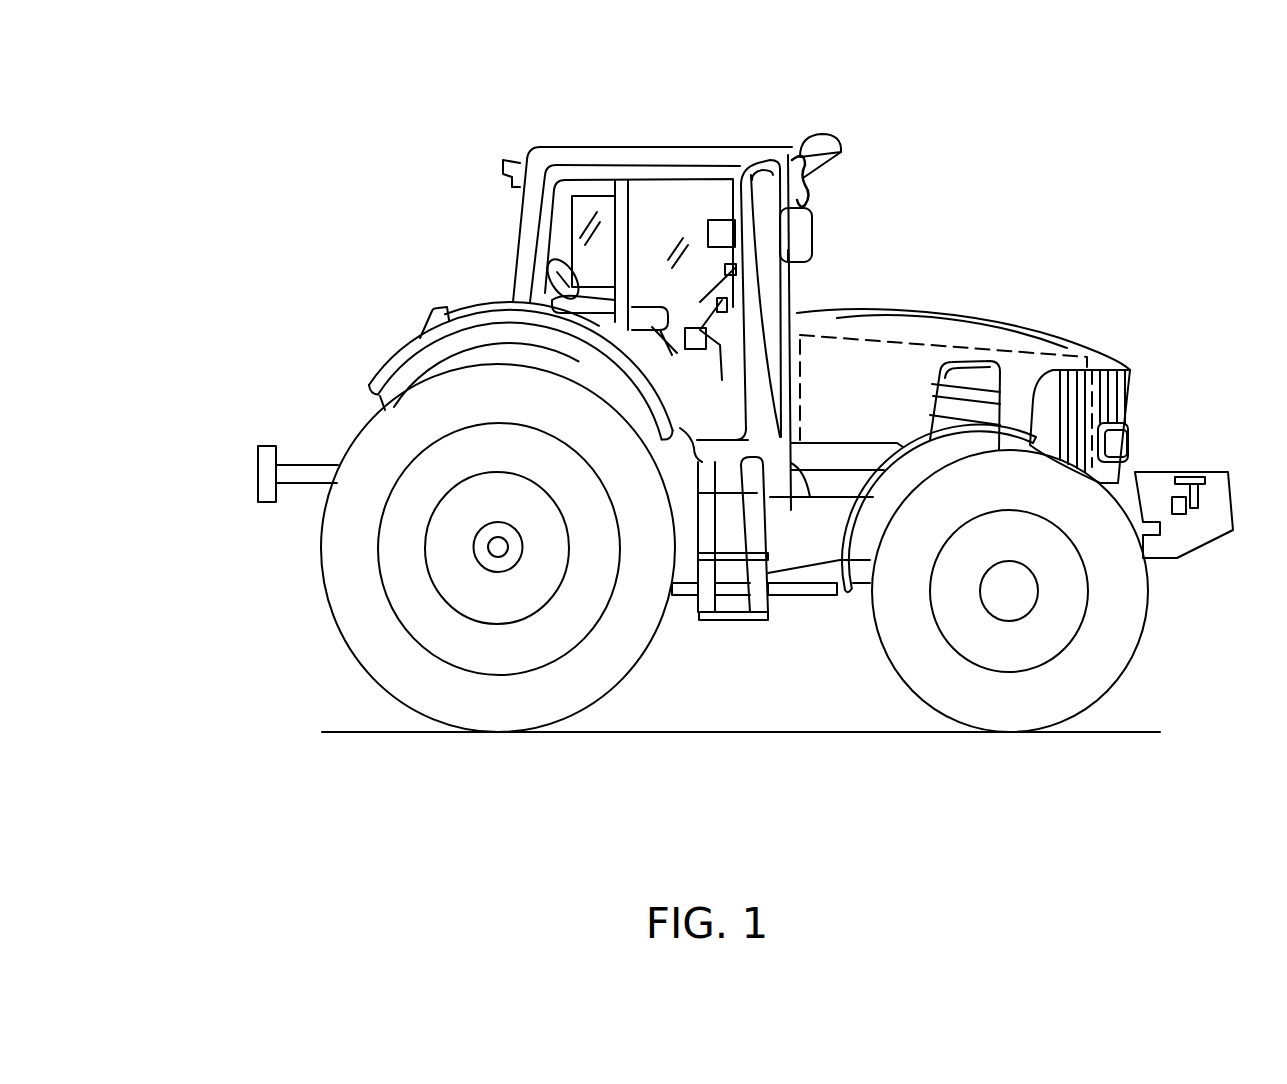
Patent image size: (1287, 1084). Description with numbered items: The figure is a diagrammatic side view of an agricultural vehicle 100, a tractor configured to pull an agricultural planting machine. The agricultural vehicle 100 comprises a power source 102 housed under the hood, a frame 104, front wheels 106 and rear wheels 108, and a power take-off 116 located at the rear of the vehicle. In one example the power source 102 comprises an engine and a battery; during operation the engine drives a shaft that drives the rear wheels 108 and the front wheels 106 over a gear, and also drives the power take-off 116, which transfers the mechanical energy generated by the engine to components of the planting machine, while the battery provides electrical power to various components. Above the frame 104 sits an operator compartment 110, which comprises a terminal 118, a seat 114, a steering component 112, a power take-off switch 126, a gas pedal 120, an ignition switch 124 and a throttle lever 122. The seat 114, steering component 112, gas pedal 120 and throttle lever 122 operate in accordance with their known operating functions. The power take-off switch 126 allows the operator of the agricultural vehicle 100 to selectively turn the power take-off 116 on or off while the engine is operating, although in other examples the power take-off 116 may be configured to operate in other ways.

The agricultural vehicle 100 is at (1025, 128).
The power source 102 is at (905, 335).
The frame 104 is at (803, 540).
The front wheels 106 is at (1087, 677).
The rear wheels 108 is at (398, 655).
The operator compartment 110 is at (664, 215).
The steering component 112 is at (672, 312).
The seat 114 is at (562, 273).
The power take-off 116 is at (270, 503).
The terminal 118 is at (721, 220).
The gas pedal 120 is at (703, 413).
The throttle lever 122 is at (685, 338).
The ignition switch 124 is at (727, 305).
The power take-off switch 126 is at (736, 270).